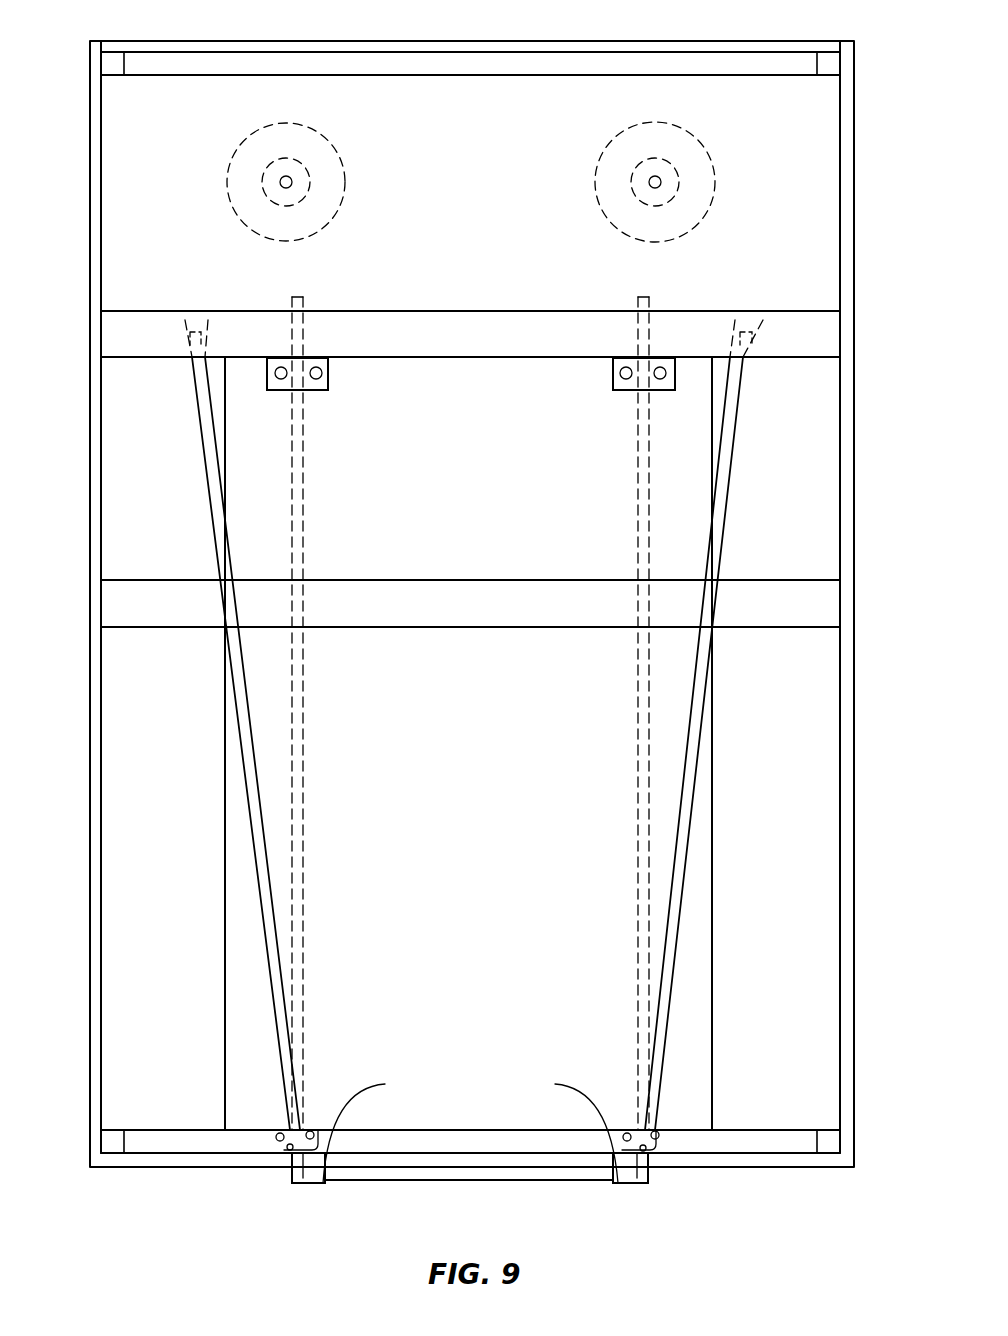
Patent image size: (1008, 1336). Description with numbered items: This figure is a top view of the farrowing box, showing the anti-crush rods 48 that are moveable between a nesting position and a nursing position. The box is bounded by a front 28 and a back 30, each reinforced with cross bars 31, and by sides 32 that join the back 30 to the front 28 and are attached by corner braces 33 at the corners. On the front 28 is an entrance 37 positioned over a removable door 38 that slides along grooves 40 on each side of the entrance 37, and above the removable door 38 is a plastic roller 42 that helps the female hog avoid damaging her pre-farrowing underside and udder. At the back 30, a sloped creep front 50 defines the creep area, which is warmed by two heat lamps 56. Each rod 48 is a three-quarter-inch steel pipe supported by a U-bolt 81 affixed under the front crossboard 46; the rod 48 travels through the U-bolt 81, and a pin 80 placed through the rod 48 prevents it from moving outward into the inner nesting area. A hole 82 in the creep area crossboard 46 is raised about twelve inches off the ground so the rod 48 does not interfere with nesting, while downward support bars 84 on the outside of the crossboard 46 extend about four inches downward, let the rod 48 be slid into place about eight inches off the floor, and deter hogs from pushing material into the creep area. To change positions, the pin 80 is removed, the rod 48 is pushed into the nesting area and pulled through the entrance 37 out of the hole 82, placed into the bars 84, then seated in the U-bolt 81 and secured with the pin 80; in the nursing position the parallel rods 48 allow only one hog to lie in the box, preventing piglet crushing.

The front 28 is at (222, 1142).
The back 30 is at (246, 42).
The cross bars 31 is at (522, 62).
The sides 32 is at (96, 466).
The corner braces 33 is at (112, 58).
The entrance 37 is at (375, 1232).
The removable door 38 is at (535, 1180).
The grooves 40 is at (470, 1124).
The plastic roller 42 is at (480, 1160).
The crossboard 46 is at (108, 340).
The anti-crush rods 48 is at (304, 735).
The sloped creep front 50 is at (493, 184).
The heat lamps 56 is at (336, 146).
The pin 80 is at (278, 1160).
The U-bolt 81 is at (310, 1131).
The hole 82 is at (182, 332).
The downward support bars 84 is at (332, 378).